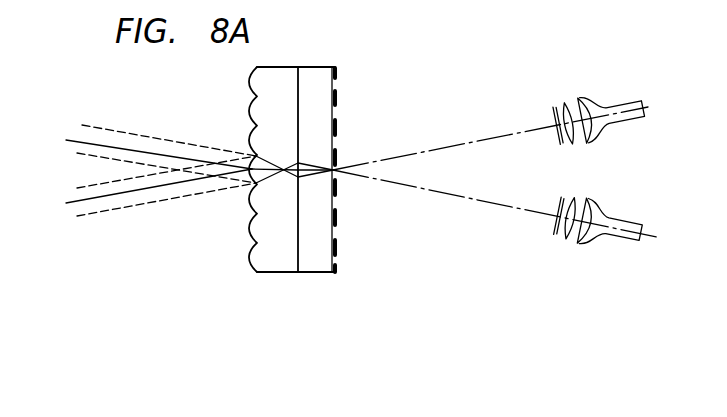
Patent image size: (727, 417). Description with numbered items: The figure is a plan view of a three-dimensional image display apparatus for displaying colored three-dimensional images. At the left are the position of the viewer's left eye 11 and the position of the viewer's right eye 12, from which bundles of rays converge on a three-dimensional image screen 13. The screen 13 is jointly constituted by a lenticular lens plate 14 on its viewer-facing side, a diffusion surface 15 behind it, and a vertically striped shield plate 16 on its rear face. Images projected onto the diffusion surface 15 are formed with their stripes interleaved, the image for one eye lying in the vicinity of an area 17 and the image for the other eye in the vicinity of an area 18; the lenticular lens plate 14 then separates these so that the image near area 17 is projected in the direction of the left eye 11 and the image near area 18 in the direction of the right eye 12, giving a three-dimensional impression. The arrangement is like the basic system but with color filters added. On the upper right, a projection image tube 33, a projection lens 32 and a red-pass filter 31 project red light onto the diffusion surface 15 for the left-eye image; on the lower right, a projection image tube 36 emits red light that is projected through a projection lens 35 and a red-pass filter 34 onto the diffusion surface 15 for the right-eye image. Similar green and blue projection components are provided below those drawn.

The left eye position 11 is at (63, 121).
The right eye position 12 is at (60, 220).
The three-dimensional image screen 13 is at (311, 170).
The lenticular lens plate 14 is at (270, 266).
The diffusion surface 15 is at (300, 245).
The vertically striped shield plate 16 is at (337, 244).
The area of the diffusion surface 17 is at (301, 178).
The area of the diffusion surface 18 is at (299, 163).
The red-pass filter 31 is at (553, 113).
The projection lens 32 is at (567, 100).
The projection image tube 33 is at (597, 98).
The red-pass filter 34 is at (555, 233).
The projection lens 35 is at (562, 247).
The projection image tube 36 is at (590, 245).